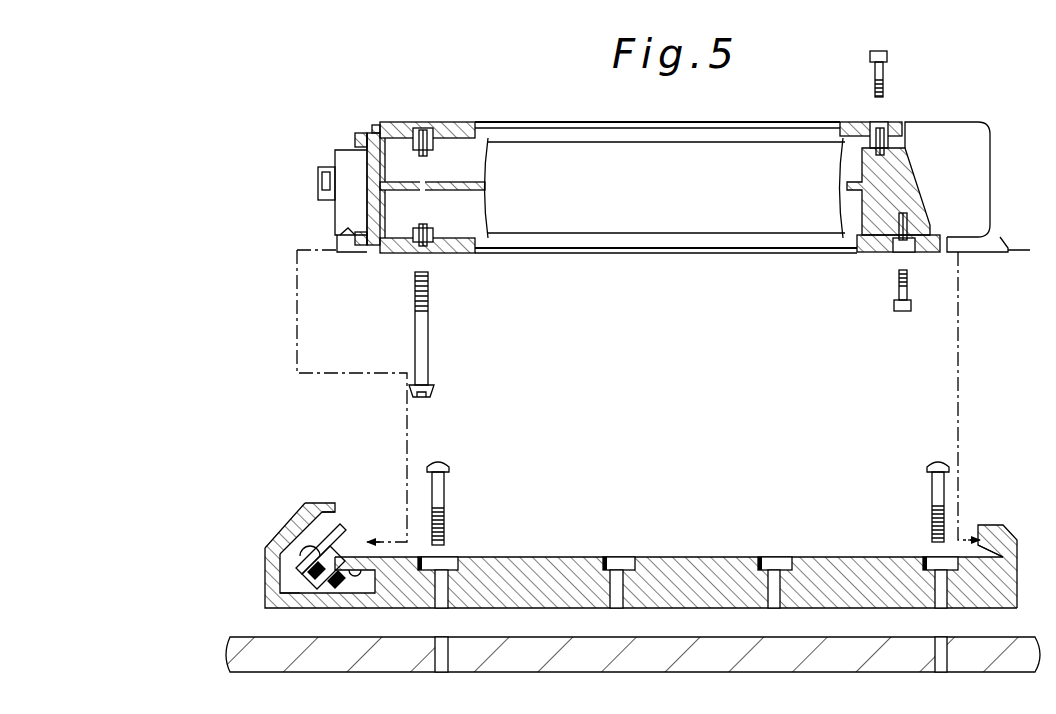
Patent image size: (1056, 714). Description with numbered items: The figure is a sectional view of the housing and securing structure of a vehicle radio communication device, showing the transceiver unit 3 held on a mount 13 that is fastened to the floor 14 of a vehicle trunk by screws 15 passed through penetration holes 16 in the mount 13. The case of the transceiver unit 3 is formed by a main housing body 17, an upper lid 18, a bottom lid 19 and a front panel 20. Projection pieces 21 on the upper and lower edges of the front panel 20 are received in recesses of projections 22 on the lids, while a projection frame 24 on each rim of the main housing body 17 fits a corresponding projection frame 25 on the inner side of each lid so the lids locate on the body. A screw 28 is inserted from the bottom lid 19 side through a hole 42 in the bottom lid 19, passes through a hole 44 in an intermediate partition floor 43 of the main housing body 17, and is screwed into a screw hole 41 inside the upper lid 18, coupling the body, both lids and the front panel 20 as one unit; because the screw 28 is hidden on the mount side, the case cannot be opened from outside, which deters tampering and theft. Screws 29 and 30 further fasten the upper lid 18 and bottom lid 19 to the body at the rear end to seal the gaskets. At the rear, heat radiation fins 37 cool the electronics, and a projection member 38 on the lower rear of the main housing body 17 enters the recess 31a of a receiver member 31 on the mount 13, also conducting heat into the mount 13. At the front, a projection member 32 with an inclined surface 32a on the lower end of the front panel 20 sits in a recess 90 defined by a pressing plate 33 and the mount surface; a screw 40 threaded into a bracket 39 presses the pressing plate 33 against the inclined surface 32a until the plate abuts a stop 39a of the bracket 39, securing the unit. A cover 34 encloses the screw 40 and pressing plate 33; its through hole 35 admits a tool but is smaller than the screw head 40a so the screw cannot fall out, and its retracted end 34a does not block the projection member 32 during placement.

The transceiver unit 3 is at (355, 110).
The mount 13 is at (697, 572).
The floor 14 is at (810, 652).
The screw 15 is at (448, 500).
The penetration hole 16 is at (445, 566).
The main housing body 17 is at (690, 152).
The upper lid 18 is at (651, 130).
The bottom lid 19 is at (645, 250).
The front panel 20 is at (345, 172).
The projection piece 21 is at (373, 128).
The projection 22 is at (355, 136).
The projection frame 24 is at (424, 130).
The projection frame 25 is at (390, 148).
The screw 28 is at (429, 330).
The screw 29 is at (886, 88).
The screw 30 is at (910, 303).
The receiver member 31 is at (1005, 530).
The recess 31a is at (985, 536).
The projection member 32 is at (337, 249).
The inclined surface 32a is at (345, 236).
The pressing plate 33 is at (322, 528).
The cover 34 is at (265, 567).
The end 34a is at (333, 501).
The through hole 35 is at (285, 531).
The heat radiation fins 37 is at (978, 184).
The projection member 38 is at (1000, 243).
The bracket 39 is at (330, 592).
The stop 39a is at (290, 591).
The screw 40 is at (333, 553).
The head 40a is at (308, 502).
The screw hole 41 is at (445, 126).
The hole 42 is at (426, 257).
The intermediate partition floor 43 is at (487, 180).
The hole 44 is at (420, 186).
The recess 90 is at (385, 540).